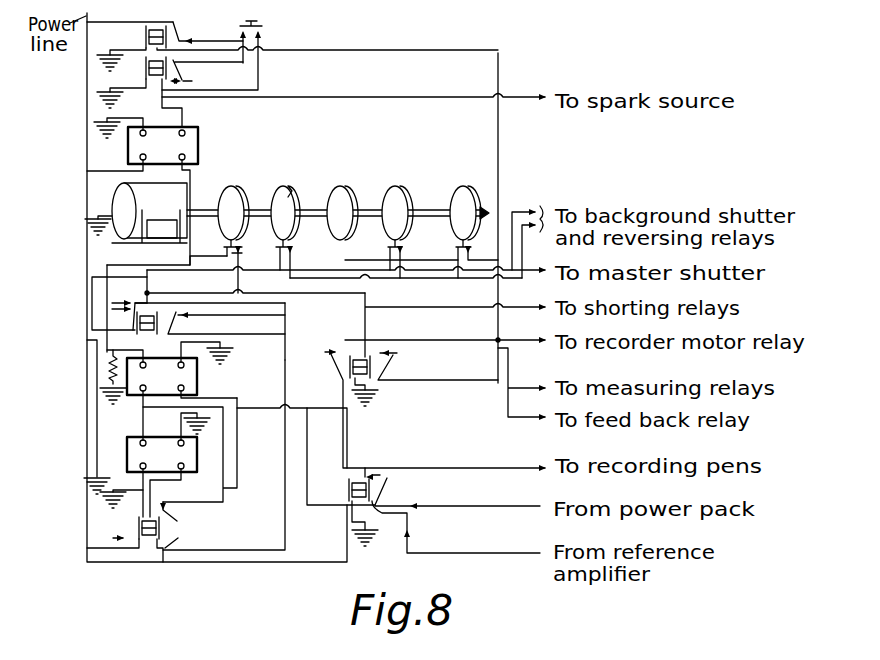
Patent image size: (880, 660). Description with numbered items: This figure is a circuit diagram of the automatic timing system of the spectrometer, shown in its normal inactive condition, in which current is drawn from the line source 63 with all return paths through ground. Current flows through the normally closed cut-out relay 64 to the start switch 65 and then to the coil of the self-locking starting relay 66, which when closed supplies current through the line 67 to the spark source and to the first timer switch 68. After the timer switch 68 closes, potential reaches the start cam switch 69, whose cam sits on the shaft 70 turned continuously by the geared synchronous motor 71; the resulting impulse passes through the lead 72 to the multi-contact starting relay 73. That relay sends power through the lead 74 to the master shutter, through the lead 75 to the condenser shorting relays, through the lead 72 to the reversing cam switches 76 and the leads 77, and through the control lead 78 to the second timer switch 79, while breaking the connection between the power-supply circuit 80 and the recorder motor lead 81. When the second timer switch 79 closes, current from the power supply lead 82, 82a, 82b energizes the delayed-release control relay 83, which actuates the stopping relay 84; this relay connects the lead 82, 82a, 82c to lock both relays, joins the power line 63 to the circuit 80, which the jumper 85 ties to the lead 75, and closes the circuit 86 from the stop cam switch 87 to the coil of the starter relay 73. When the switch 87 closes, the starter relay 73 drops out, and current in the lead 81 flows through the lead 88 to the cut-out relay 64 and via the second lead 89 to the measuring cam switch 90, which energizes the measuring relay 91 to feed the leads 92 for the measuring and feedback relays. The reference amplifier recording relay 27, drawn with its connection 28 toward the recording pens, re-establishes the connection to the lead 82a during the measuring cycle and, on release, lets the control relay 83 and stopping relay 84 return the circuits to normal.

The reference amplifier recording relay 27 is at (392, 545).
The recording pens connection 28 is at (493, 469).
The line source 63 is at (86, 74).
The cut-out relay 64 is at (145, 40).
The start switch 65 is at (262, 28).
The starting relay 66 is at (145, 73).
The line 67 is at (354, 102).
The first timer switch 68 is at (199, 148).
The start cam switch 69 is at (227, 243).
The shaft 70 is at (317, 204).
The geared synchronous motor 71 is at (117, 192).
The lead 72 is at (147, 258).
The starting relay 73 is at (145, 332).
The lead 74 is at (242, 292).
The lead 75 is at (335, 318).
The reversing cam switches 76 is at (328, 243).
The leads 77 is at (535, 207).
The control lead 78 is at (110, 268).
The second timer switch 79 is at (198, 386).
The power-supply circuit 80 is at (285, 379).
The lead 81 is at (289, 349).
The power supply lead 82 is at (306, 452).
The power supply lead section 82a is at (280, 396).
The power supply lead section 82b is at (226, 396).
The power supply lead section 82c is at (233, 444).
The control relay 83 is at (127, 442).
The stopping relay 84 is at (172, 523).
The jumper 85 is at (288, 316).
The circuit 86 is at (126, 519).
The stop cam switch 87 is at (407, 256).
The lead 88 is at (497, 126).
The second lead 89 is at (485, 200).
The measuring cam switch 90 is at (458, 244).
The measuring relay 91 is at (365, 393).
The leads 92 is at (509, 370).